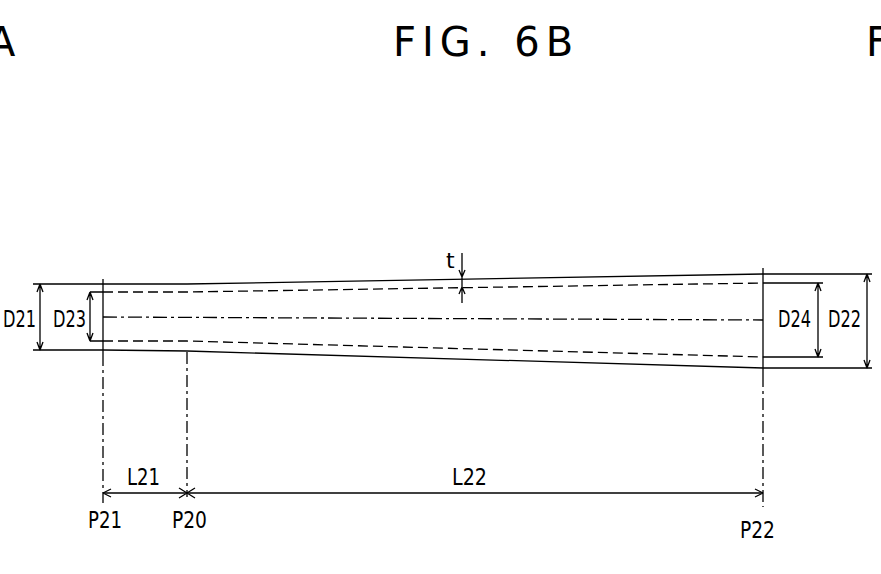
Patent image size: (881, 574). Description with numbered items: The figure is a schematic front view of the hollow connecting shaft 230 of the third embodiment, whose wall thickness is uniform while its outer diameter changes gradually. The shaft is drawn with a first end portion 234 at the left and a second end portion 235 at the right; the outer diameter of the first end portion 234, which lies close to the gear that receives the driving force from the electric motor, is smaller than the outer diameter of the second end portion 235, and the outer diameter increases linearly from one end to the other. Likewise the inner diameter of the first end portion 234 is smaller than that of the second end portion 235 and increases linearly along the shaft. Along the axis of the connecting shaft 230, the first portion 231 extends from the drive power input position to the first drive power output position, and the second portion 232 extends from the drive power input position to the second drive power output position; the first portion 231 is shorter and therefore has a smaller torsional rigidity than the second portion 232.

The connecting shaft 230 is at (418, 255).
The first portion 231 is at (147, 353).
The second portion 232 is at (557, 363).
The first end portion 234 is at (122, 284).
The second end portion 235 is at (747, 273).